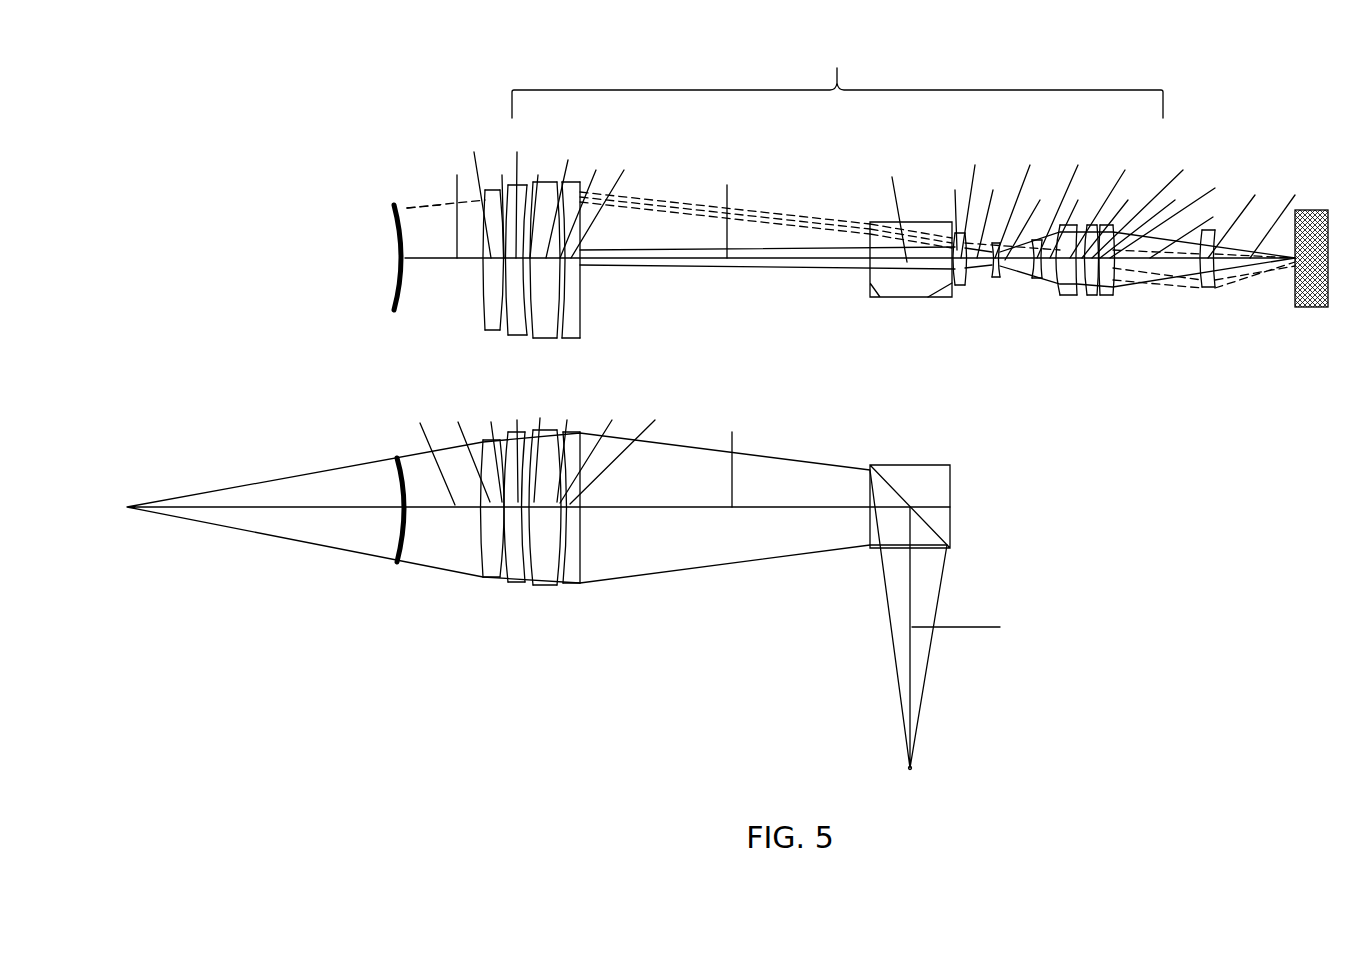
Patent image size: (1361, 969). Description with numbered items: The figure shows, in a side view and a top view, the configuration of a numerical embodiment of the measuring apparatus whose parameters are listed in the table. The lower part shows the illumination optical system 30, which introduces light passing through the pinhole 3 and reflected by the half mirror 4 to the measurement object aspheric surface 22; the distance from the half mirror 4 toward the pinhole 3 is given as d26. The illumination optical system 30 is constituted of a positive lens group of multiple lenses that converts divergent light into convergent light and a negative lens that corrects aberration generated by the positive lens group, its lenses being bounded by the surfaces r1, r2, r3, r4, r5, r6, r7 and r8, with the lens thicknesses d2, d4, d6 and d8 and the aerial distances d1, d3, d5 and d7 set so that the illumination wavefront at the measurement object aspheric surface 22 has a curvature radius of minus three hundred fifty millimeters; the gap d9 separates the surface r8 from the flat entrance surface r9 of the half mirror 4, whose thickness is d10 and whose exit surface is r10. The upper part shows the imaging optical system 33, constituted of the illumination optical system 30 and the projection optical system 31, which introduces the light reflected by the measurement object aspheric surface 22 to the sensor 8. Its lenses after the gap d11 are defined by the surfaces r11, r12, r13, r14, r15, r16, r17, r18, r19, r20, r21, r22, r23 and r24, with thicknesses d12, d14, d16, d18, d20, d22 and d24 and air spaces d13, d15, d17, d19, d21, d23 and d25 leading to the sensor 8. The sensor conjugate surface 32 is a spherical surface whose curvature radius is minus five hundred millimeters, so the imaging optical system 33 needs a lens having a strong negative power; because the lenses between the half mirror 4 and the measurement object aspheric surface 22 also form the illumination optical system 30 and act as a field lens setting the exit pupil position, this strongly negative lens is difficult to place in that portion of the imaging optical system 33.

The pinhole 3 is at (908, 770).
The half mirror 4 is at (894, 478).
The sensor 8 is at (1313, 208).
The measurement object aspheric surface 22 is at (397, 597).
The illumination optical system 30 is at (532, 223).
The projection optical system 31 is at (1047, 203).
The sensor conjugate surface 32 is at (406, 205).
The imaging optical system 33 is at (838, 70).
The lens surface distance d1 is at (434, 326).
The lens surface distance d2 is at (467, 313).
The lens surface distance d3 is at (494, 324).
The lens surface distance d4 is at (516, 313).
The lens surface distance d5 is at (539, 324).
The lens surface distance d6 is at (568, 317).
The lens surface distance d7 is at (598, 323).
The lens surface distance d8 is at (624, 323).
The lens surface distance d9 is at (728, 332).
The lens surface distance d10 is at (893, 204).
The lens surface distance d11 is at (945, 207).
The lens surface distance d12 is at (977, 197).
The lens surface distance d13 is at (995, 211).
The lens surface distance d14 is at (1024, 197).
The lens surface distance d15 is at (1033, 218).
The lens surface distance d16 is at (1069, 197).
The lens surface distance d17 is at (1075, 217).
The lens surface distance d18 is at (1109, 200).
The lens surface distance d19 is at (1116, 217).
The lens surface distance d20 is at (1149, 200).
The lens surface distance d21 is at (1149, 217).
The lens surface distance d22 is at (1174, 210).
The lens surface distance d23 is at (1192, 225).
The lens surface distance d24 is at (1243, 214).
The lens surface distance d25 is at (1284, 214).
The lens surface distance d26 is at (976, 622).
The lens surface r1 is at (484, 292).
The lens surface r2 is at (498, 300).
The lens surface r3 is at (508, 305).
The lens surface r4 is at (525, 310).
The lens surface r5 is at (535, 305).
The lens surface r6 is at (558, 302).
The lens surface r7 is at (565, 305).
The lens surface r8 is at (580, 300).
The half mirror surface r9 is at (876, 297).
The half mirror surface r10 is at (935, 297).
The lens surface r11 is at (955, 285).
The lens surface r12 is at (965, 285).
The lens surface r13 is at (992, 278).
The lens surface r14 is at (1000, 278).
The lens surface r15 is at (1033, 280).
The lens surface r16 is at (1042, 280).
The lens surface r17 is at (1062, 296).
The lens surface r18 is at (1077, 296).
The lens surface r19 is at (1089, 297).
The lens surface r20 is at (1099, 297).
The lens surface r21 is at (1112, 296).
The lens surface r22 is at (1114, 288).
The lens surface r23 is at (1205, 288).
The lens surface r24 is at (1217, 288).